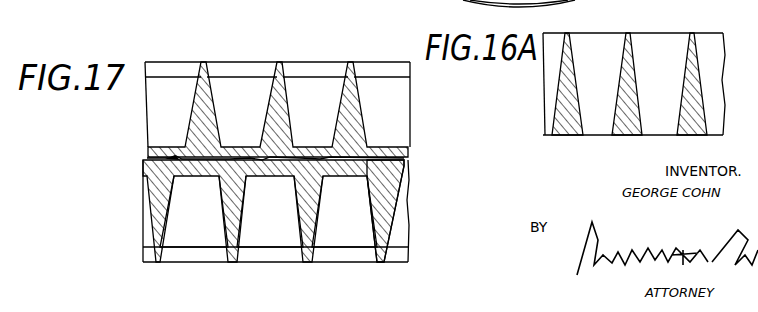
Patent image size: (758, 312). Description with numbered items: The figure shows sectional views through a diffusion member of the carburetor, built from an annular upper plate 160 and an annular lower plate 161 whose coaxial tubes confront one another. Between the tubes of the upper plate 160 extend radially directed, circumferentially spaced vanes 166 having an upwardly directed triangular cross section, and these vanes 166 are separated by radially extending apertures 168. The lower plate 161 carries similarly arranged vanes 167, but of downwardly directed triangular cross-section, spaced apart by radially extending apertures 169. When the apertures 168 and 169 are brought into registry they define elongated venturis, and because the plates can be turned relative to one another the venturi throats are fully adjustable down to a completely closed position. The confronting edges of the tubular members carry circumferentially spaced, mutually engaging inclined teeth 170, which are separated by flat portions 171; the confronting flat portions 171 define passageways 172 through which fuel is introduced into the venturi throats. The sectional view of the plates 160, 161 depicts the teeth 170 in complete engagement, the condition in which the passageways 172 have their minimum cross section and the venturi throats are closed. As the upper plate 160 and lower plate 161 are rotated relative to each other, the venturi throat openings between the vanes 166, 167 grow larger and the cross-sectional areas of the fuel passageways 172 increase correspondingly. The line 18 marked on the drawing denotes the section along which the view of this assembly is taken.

In FIG. 17, the sheet 18 is at (168, 62).
In FIG. 17, the upper plate 160 is at (326, 61).
In FIG. 17, the lower plate 161 is at (366, 262).
In FIG. 16A, the vanes 166 is at (632, 50).
In FIG. 17, the vanes 167 is at (388, 199).
In FIG. 16A, the apertures 168 is at (677, 48).
In FIG. 17, the apertures 169 is at (360, 228).
In FIG. 17, the inclined teeth 170 is at (221, 190).
In FIG. 17, the flat portions 171 is at (274, 181).
In FIG. 17, the passageways 172 is at (288, 151).